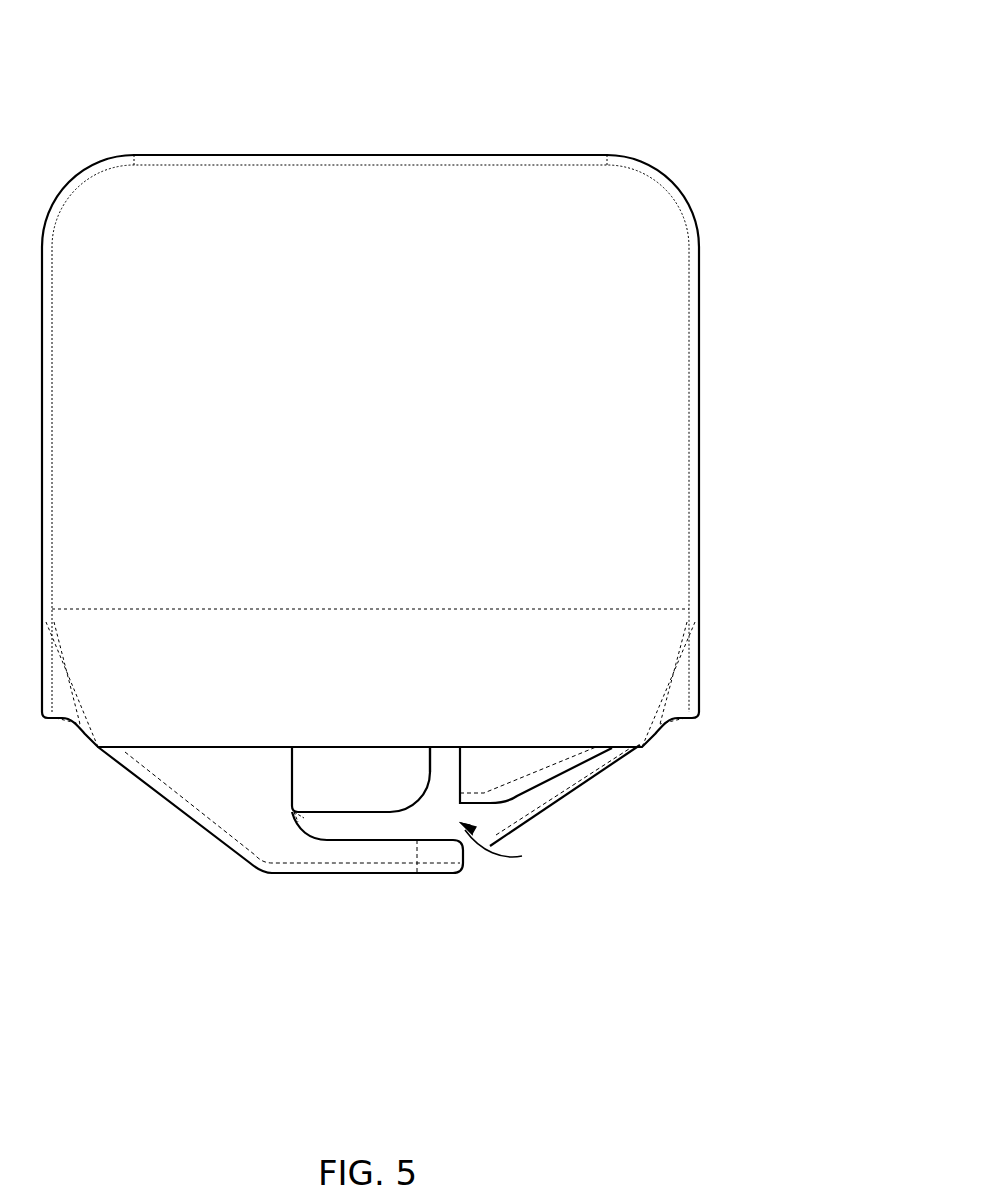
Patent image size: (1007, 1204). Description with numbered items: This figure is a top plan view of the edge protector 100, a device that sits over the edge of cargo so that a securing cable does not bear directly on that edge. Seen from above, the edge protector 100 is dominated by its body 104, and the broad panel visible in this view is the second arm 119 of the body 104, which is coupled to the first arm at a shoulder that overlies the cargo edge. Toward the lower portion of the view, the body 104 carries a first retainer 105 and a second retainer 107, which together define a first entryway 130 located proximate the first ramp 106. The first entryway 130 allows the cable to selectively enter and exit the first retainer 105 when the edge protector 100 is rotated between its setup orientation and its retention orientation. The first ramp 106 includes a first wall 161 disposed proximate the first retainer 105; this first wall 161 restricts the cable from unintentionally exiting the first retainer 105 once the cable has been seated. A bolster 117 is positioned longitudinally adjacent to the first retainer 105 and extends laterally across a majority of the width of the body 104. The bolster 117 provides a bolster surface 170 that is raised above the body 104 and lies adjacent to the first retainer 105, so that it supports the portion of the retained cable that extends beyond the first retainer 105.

The edge protector 100 is at (586, 46).
The body 104 is at (677, 460).
The first retainer 105 is at (304, 850).
The first ramp 106 is at (568, 796).
The second retainer 107 is at (387, 820).
The bolster 117 is at (341, 630).
The second arm 119 is at (520, 268).
The first entryway 130 is at (512, 847).
The first wall 161 is at (442, 758).
The bolster surface 170 is at (169, 700).